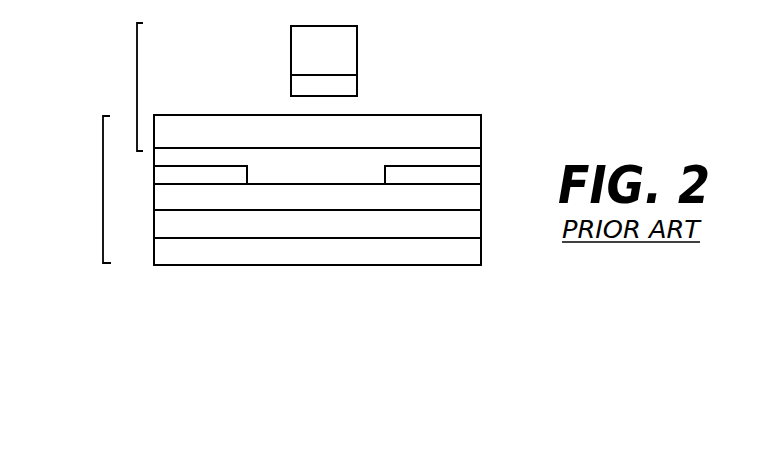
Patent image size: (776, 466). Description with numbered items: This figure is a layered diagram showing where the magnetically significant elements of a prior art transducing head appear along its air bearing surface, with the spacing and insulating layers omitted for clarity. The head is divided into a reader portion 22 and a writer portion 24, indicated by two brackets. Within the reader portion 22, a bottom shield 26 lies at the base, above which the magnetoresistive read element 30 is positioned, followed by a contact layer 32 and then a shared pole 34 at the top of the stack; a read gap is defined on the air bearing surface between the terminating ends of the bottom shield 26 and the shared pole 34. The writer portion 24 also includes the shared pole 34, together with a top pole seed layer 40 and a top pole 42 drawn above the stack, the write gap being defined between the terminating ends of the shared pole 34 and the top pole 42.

The reader portion 22 is at (103, 198).
The writer portion 24 is at (137, 86).
The bottom shield 26 is at (453, 247).
The magnetoresistive (MR) read element 30 is at (448, 195).
The contact layer 32 is at (463, 175).
The shared pole 34 is at (389, 144).
The top pole seed layer 40 is at (347, 85).
The top pole 42 is at (341, 56).